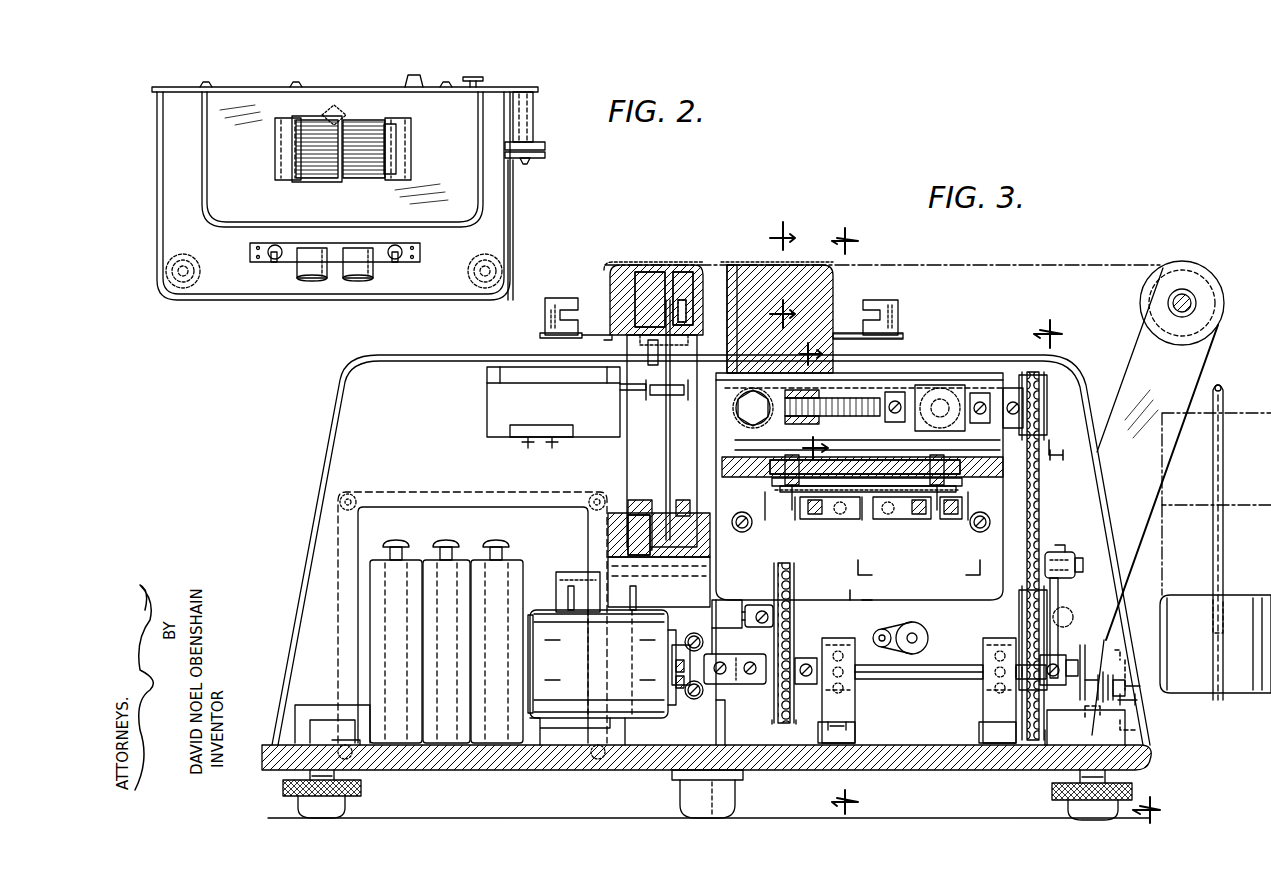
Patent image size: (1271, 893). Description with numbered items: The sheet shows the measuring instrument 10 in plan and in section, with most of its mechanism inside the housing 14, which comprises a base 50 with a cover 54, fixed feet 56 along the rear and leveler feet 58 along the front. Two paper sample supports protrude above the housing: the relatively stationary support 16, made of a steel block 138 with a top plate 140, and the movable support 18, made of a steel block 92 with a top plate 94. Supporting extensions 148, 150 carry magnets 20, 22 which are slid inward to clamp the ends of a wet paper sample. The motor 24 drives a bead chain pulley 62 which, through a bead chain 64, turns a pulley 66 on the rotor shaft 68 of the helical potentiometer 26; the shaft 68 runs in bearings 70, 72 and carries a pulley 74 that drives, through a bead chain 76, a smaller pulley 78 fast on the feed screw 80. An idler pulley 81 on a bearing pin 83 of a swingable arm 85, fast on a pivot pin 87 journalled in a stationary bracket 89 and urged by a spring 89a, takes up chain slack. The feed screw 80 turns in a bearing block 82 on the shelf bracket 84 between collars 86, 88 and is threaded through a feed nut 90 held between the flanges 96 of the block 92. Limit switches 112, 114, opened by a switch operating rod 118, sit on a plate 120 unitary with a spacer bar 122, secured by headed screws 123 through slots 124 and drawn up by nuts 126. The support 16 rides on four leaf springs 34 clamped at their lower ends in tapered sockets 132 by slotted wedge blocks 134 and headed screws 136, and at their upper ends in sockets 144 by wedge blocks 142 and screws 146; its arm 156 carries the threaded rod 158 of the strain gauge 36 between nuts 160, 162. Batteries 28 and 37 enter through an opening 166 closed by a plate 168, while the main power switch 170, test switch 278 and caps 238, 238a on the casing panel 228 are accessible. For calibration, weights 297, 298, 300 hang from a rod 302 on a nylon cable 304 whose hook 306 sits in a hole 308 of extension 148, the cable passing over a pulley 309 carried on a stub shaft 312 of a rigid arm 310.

In FIG. 3, the measuring instrument 10 is at (263, 398).
In FIG. 3, the housing 14 is at (299, 508).
In FIG. 2, the relatively stationary sample support 16 is at (318, 181).
In FIG. 3, the relatively stationary sample support 16 is at (607, 255).
In FIG. 2, the movable sample support 18 is at (366, 181).
In FIG. 3, the movable sample support 18 is at (825, 255).
In FIG. 2, the magnet 20 is at (276, 158).
In FIG. 3, the magnet 20 is at (552, 298).
In FIG. 2, the magnet 22 is at (410, 143).
In FIG. 3, the magnet 22 is at (886, 300).
In FIG. 3, the motor 24 is at (572, 574).
In FIG. 3, the helical potentiometer 26 is at (545, 740).
In FIG. 3, the battery 28 is at (412, 560).
In FIG. 3, the leaf springs 34 is at (632, 458).
In FIG. 3, the strain gauge 36 is at (476, 392).
In FIG. 3, the battery 37 is at (478, 560).
In FIG. 3, the base 50 is at (946, 772).
In FIG. 3, the cover 54 is at (457, 342).
In FIG. 3, the fixed feet 56 is at (736, 790).
In FIG. 3, the leveler feet 58 is at (348, 806).
In FIG. 3, the bead chain pulley 62 is at (792, 580).
In FIG. 3, the bead chain 64 is at (758, 711).
In FIG. 3, the bead chain pulley 66 is at (792, 710).
In FIG. 3, the rotor shaft 68 is at (940, 666).
In FIG. 3, the bearing 70 is at (847, 638).
In FIG. 3, the bearing 72 is at (996, 638).
In FIG. 3, the bead chain pulley 74 is at (1011, 606).
In FIG. 3, the bead chain 76 is at (1052, 493).
In FIG. 3, the bead chain pulley 78 is at (1043, 398).
In FIG. 3, the feed screw 80 is at (1000, 422).
In FIG. 3, the idler pulley 81 is at (1069, 560).
In FIG. 3, the bearing block 82 is at (942, 386).
In FIG. 3, the bearing pin 83 is at (1077, 556).
In FIG. 3, the shelf bracket 84 is at (750, 466).
In FIG. 3, the swingable arm 85 is at (1058, 608).
In FIG. 3, the collar 86 is at (893, 424).
In FIG. 3, the pivot pin 87 is at (1126, 694).
In FIG. 3, the collar 88 is at (985, 392).
In FIG. 3, the stationary bracket 89 is at (1085, 660).
In FIG. 3, the spring 89a is at (1110, 674).
In FIG. 3, the feed nut 90 is at (822, 393).
In FIG. 3, the steel block 92 is at (733, 289).
In FIG. 3, the top plate 94 is at (768, 263).
In FIG. 3, the flanges 96 is at (890, 373).
In FIG. 3, the limit switch 112 is at (816, 520).
In FIG. 3, the limit switch 114 is at (925, 520).
In FIG. 3, the switch operating rod 118 is at (845, 522).
In FIG. 3, the plate 120 is at (872, 520).
In FIG. 3, the spacer bar 122 is at (955, 496).
In FIG. 3, the headed screws 123 is at (744, 530).
In FIG. 3, the slots 124 is at (960, 484).
In FIG. 3, the nuts 126 is at (785, 452).
In FIG. 3, the tapered socket 132 is at (656, 547).
In FIG. 3, the slotted wedge block 134 is at (648, 508).
In FIG. 3, the headed screw 136 is at (684, 500).
In FIG. 3, the steel block 138 is at (664, 264).
In FIG. 3, the top plate 140 is at (620, 263).
In FIG. 3, the slotted wedge blocks 142 is at (688, 312).
In FIG. 3, the tapered sockets 144 is at (690, 272).
In FIG. 3, the headed screws 146 is at (652, 362).
In FIG. 3, the supporting extension 148 is at (540, 336).
In FIG. 3, the supporting extension 150 is at (895, 339).
In FIG. 3, the arm 156 is at (688, 340).
In FIG. 3, the threaded rod 158 is at (635, 392).
In FIG. 3, the nut 160 is at (654, 400).
In FIG. 3, the nut 162 is at (682, 420).
In FIG. 3, the opening 166 is at (392, 512).
In FIG. 3, the closure plate 168 is at (466, 490).
In FIG. 2, the main power switch 170 is at (272, 262).
In FIG. 2, the casing panel 228 is at (421, 249).
In FIG. 2, the cap 238 is at (360, 282).
In FIG. 2, the cap 238a is at (312, 282).
In FIG. 2, the test switch 278 is at (399, 262).
In FIG. 3, the weight 297 is at (1217, 703).
In FIG. 3, the weight 298 is at (1195, 560).
In FIG. 3, the weight 300 is at (1243, 413).
In FIG. 3, the rod 302 is at (1224, 475).
In FIG. 3, the nylon cable 304 is at (1018, 263).
In FIG. 3, the hook 306 is at (612, 340).
In FIG. 3, the hole 308 is at (592, 333).
In FIG. 2, the pulley 309 is at (542, 154).
In FIG. 3, the pulley 309 is at (1162, 280).
In FIG. 2, the rigid arm 310 is at (506, 86).
In FIG. 3, the rigid arm 310 is at (1140, 350).
In FIG. 2, the stub shaft 312 is at (534, 112).